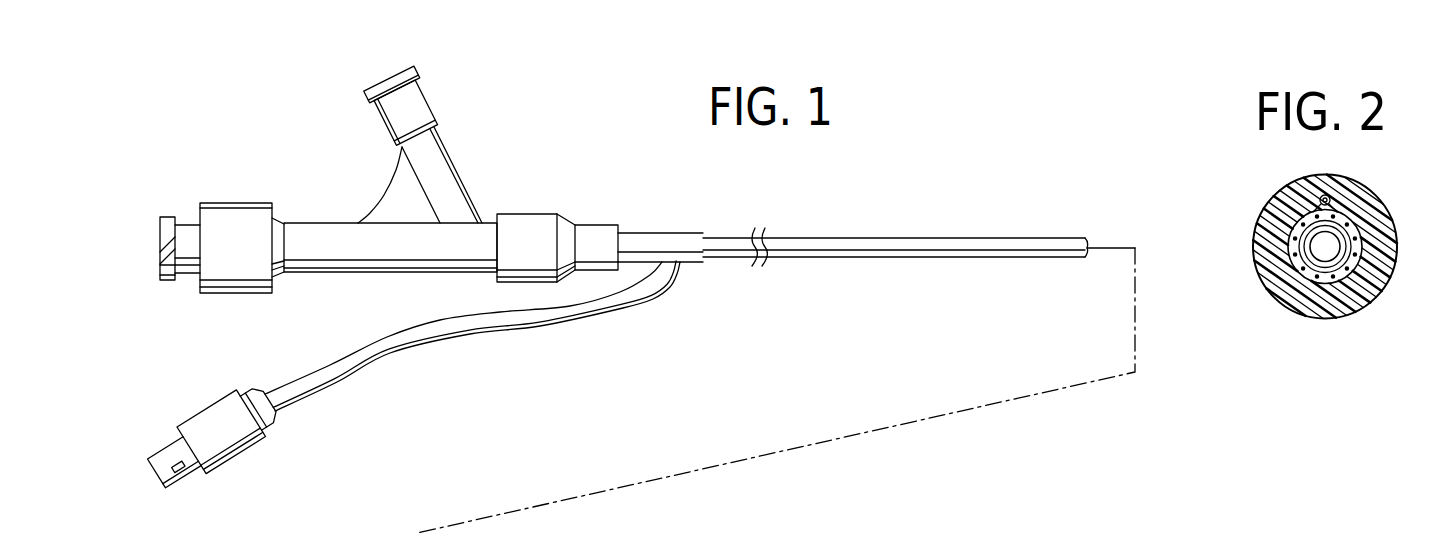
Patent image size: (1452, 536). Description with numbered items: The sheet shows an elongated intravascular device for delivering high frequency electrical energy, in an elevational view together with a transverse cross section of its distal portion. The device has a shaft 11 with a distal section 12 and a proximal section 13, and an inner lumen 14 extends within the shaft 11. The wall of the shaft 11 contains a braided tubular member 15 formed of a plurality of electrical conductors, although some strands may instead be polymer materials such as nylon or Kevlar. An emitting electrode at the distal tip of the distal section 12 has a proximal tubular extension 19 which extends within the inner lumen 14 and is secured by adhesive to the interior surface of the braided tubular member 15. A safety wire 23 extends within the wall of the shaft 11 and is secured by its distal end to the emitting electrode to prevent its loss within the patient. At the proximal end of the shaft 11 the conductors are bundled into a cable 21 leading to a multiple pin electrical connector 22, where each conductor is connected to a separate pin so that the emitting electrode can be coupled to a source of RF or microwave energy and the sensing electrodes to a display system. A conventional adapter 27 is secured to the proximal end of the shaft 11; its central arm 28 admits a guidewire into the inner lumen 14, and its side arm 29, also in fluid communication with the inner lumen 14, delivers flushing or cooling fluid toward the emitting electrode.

In FIG. 1, the shaft 11 is at (1020, 252).
In FIG. 2, the distal section 12 is at (1380, 288).
In FIG. 1, the proximal section 13 is at (867, 237).
In FIG. 2, the inner lumen 14 is at (1317, 253).
In FIG. 2, the braided tubular member 15 is at (1310, 282).
In FIG. 2, the proximal tubular extension 19 is at (1347, 238).
In FIG. 1, the cable 21 is at (343, 375).
In FIG. 1, the multiple pin electrical connector 22 is at (212, 415).
In FIG. 2, the safety wire 23 is at (1331, 198).
In FIG. 1, the adapter 27 is at (387, 273).
In FIG. 1, the central arm 28 is at (343, 235).
In FIG. 1, the side arm 29 is at (460, 170).